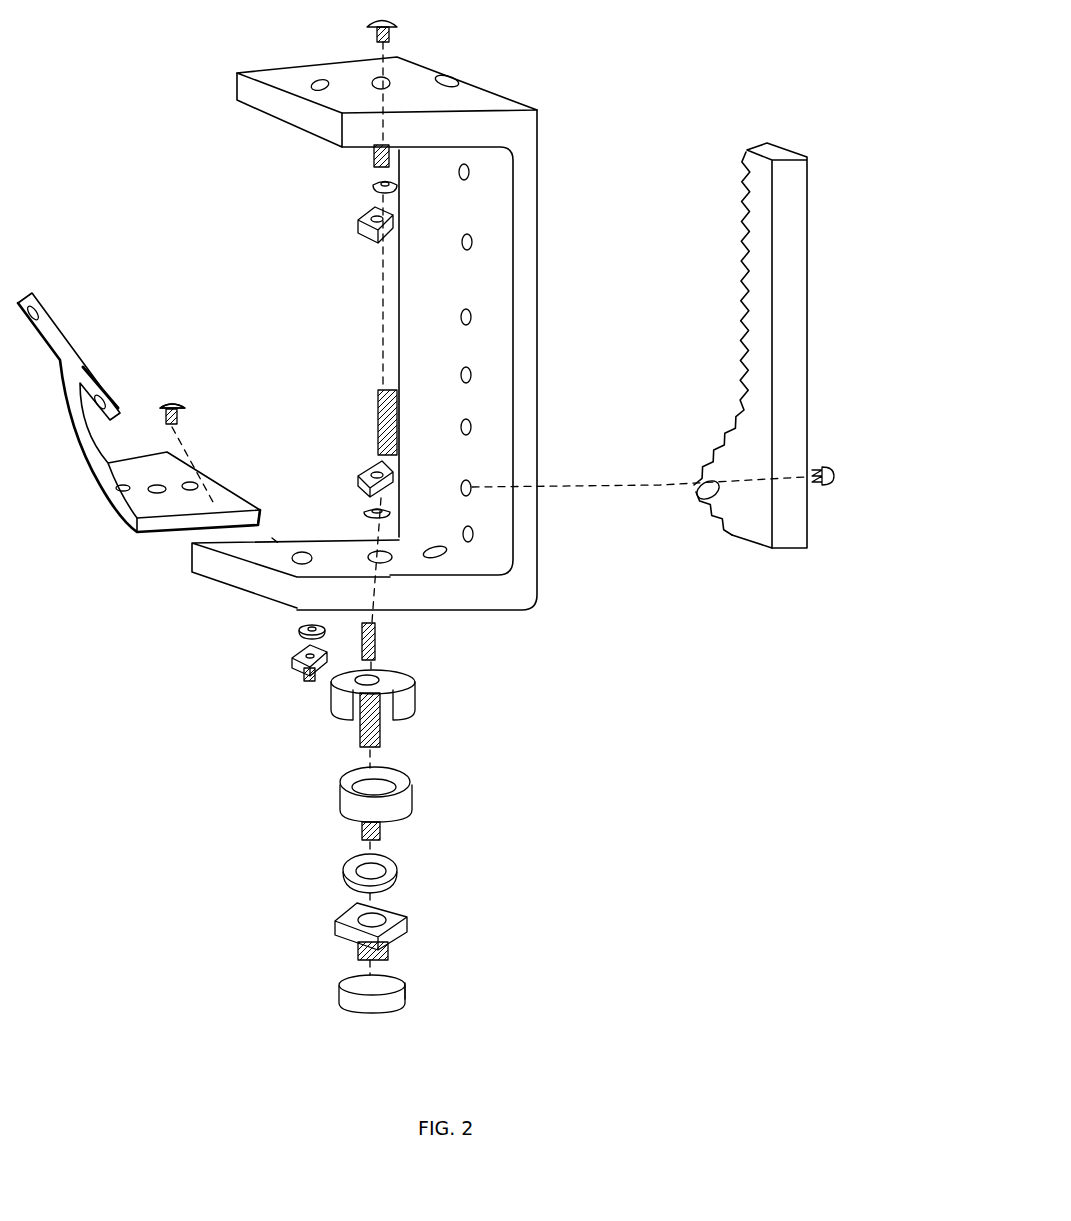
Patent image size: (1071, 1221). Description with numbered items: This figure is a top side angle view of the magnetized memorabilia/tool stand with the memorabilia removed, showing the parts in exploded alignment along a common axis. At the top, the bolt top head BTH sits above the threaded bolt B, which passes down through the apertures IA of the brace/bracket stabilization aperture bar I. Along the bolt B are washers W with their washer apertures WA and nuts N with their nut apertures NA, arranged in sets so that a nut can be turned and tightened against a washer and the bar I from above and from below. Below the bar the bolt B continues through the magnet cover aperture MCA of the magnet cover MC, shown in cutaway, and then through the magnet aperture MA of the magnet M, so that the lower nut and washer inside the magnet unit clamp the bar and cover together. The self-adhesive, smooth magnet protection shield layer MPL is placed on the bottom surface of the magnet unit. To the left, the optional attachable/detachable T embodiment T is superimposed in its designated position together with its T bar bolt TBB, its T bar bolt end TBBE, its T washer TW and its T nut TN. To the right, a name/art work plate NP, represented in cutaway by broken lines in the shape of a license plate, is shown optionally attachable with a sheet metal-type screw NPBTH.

The bolt top head BTH is at (397, 20).
The threaded bolt B is at (393, 30).
The brace/bracket stabilization aperture bar I is at (540, 123).
The apertures IA is at (472, 317).
The washer aperture WA is at (372, 183).
The washer W is at (400, 192).
The nut aperture NA is at (360, 224).
The nut N is at (395, 229).
The name/art work plate NP is at (808, 360).
The sheet metal-type screw NPBTH is at (836, 472).
The T bar bolt TBB is at (180, 415).
The T embodiment T is at (152, 540).
The T washer TW is at (296, 628).
The T nut TN is at (290, 665).
The T bar bolt end TBBE is at (300, 678).
The magnet cover aperture MCA is at (410, 678).
The magnet cover MC is at (415, 708).
The magnet aperture MA is at (398, 783).
The magnet M is at (410, 813).
The magnet protection shield layer MPL is at (370, 1012).